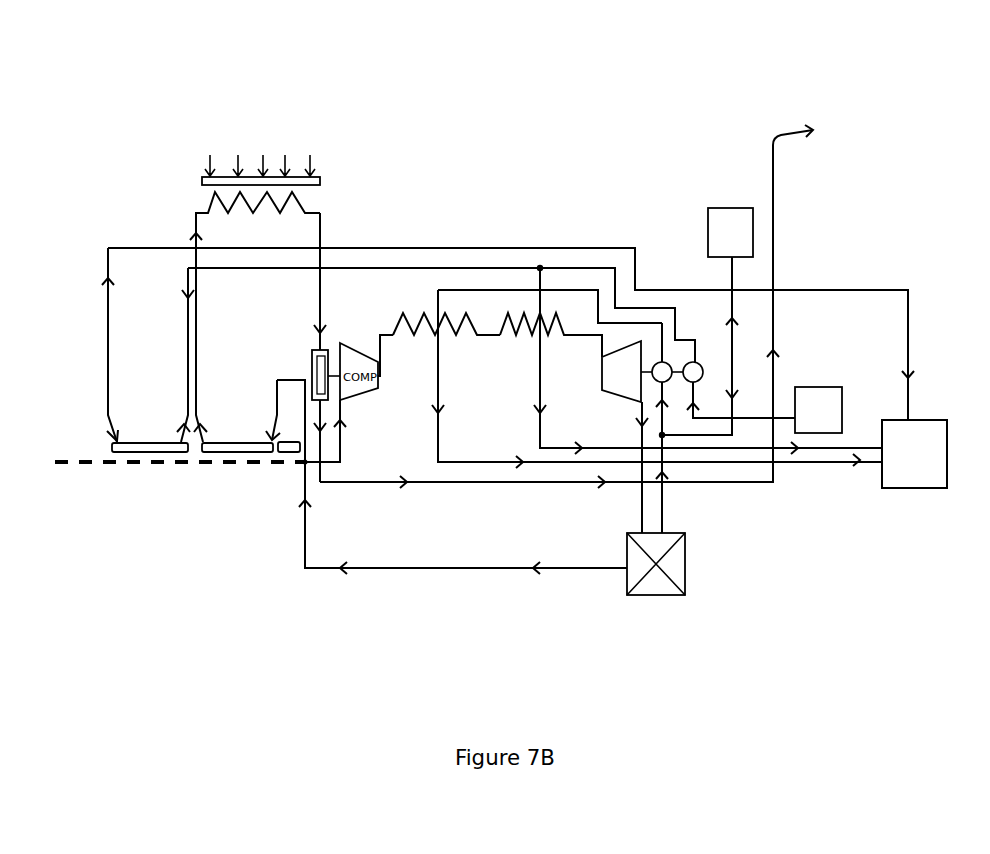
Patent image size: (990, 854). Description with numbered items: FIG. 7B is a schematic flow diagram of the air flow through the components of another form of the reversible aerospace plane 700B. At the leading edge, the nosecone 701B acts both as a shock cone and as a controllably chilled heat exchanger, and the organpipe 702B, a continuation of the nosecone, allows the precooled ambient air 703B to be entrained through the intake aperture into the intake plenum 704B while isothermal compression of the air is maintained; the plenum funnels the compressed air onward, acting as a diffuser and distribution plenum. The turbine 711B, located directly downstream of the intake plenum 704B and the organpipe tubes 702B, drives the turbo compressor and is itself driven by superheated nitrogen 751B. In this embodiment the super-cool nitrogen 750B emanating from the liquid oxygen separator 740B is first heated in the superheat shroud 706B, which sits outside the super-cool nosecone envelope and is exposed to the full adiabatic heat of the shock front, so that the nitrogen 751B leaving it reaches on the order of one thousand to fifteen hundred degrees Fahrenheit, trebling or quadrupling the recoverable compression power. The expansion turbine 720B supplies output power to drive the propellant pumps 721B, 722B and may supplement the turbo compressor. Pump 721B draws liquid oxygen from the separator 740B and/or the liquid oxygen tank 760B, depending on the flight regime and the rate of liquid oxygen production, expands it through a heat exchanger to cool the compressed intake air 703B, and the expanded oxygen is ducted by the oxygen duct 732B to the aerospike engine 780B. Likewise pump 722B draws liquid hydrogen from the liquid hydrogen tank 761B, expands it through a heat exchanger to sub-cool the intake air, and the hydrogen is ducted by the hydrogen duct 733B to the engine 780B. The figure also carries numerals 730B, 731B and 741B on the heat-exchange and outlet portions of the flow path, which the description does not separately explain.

The reversible aerospace plane 700B is at (147, 118).
The nosecone 701B is at (148, 438).
The organpipe 702B is at (230, 412).
The ambient air 703B is at (63, 460).
The intake plenum 704B is at (287, 453).
The superheat shroud 706B is at (328, 178).
The turbine 711B is at (330, 347).
The expansion turbine 720B is at (632, 340).
The liquid oxygen pump 721B is at (697, 356).
The liquid hydrogen pump 722B is at (708, 375).
The LO2 heat exchanger 730B is at (453, 312).
The LH2 heat exchanger 731B is at (553, 312).
The oxygen duct 732B is at (798, 462).
The hydrogen duct 733B is at (838, 448).
The liquid oxygen separator 740B is at (670, 585).
The exhaust outlet 741B is at (572, 297).
The separated nitrogen conduit 750B is at (477, 572).
The superheated nitrogen 751B is at (322, 292).
The liquid oxygen tank 760B is at (740, 208).
The liquid hydrogen tank 761B is at (818, 400).
The aerospike engine 780B is at (914, 467).